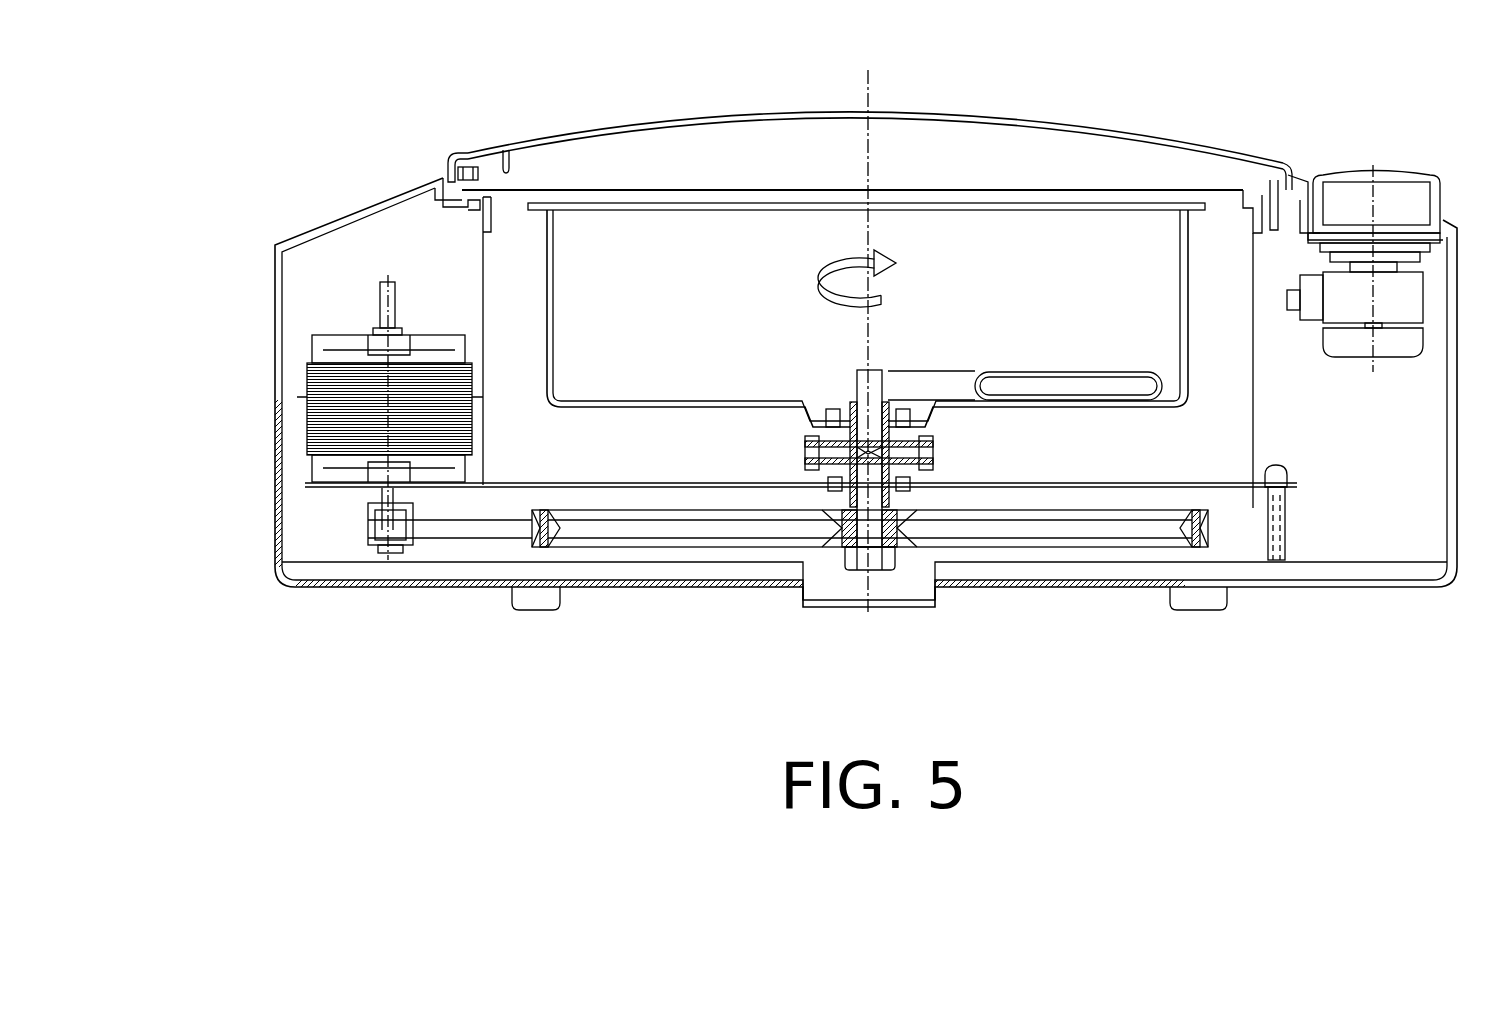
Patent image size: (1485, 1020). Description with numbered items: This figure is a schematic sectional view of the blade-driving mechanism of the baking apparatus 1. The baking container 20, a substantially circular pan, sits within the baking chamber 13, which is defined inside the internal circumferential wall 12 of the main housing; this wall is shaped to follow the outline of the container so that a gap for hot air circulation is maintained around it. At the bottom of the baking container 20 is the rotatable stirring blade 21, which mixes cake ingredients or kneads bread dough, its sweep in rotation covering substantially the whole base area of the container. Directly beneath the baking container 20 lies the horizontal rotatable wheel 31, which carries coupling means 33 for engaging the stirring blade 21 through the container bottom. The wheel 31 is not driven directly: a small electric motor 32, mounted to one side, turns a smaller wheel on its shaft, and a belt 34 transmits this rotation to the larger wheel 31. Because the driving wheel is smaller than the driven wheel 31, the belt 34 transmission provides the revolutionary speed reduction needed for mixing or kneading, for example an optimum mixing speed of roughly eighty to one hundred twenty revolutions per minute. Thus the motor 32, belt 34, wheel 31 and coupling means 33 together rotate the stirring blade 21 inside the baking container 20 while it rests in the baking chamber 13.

The baking apparatus 1 is at (370, 112).
The internal circumferential wall 12 is at (1240, 402).
The baking chamber 13 is at (975, 155).
The baking container 20 is at (665, 405).
The stirring blade 21 is at (1043, 380).
The horizontal rotatable wheel 31 is at (658, 540).
The electric motor 32 is at (340, 333).
The coupling means 33 is at (948, 480).
The belt 34 is at (432, 525).